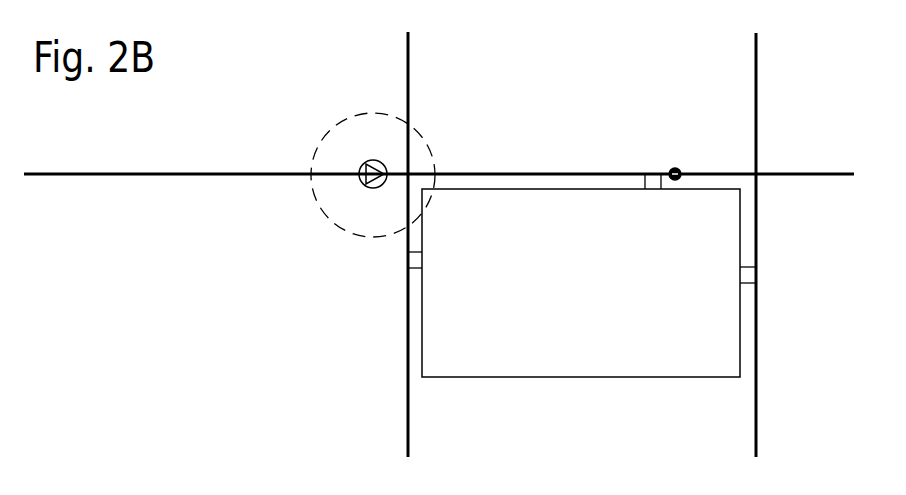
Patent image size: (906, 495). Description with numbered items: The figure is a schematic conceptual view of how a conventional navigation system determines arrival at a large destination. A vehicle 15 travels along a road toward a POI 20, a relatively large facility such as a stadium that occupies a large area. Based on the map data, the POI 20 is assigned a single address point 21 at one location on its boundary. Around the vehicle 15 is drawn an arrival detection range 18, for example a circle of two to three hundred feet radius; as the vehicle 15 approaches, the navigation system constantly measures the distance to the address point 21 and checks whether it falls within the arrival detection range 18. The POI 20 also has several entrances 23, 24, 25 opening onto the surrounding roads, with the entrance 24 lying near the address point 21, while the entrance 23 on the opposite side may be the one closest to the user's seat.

The vehicle 15 is at (371, 160).
The arrival detection range 18 is at (356, 112).
The POI 20 is at (605, 365).
The address point 21 is at (678, 170).
The entrance 23 is at (407, 268).
The entrance 24 is at (652, 183).
The entrance 25 is at (753, 278).